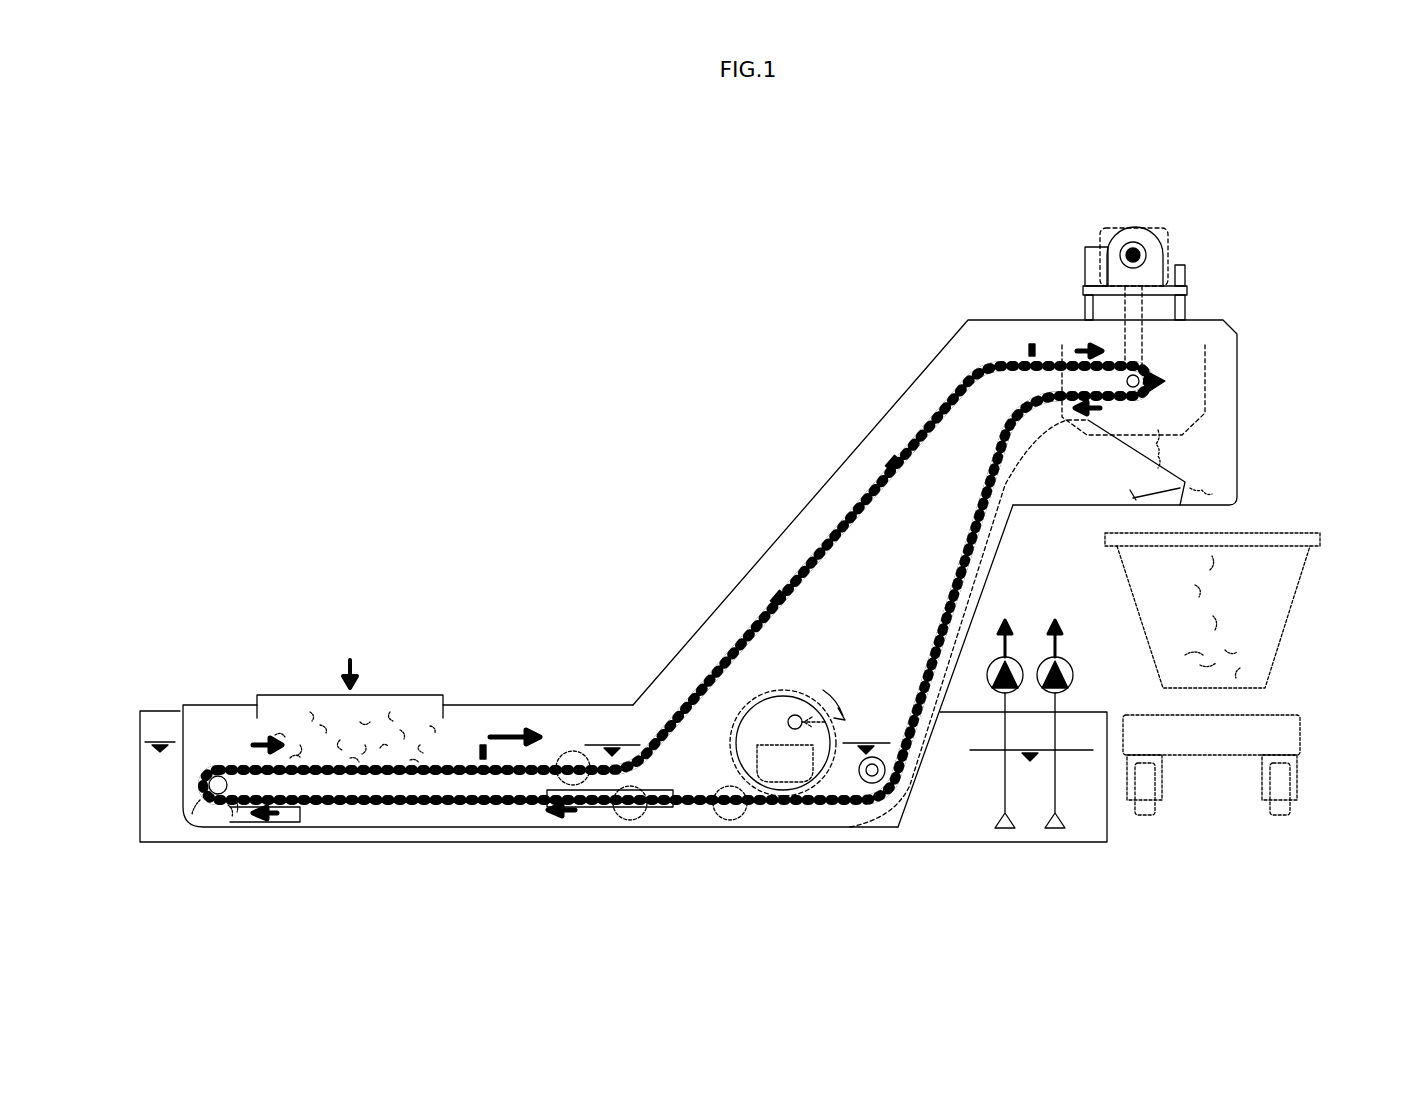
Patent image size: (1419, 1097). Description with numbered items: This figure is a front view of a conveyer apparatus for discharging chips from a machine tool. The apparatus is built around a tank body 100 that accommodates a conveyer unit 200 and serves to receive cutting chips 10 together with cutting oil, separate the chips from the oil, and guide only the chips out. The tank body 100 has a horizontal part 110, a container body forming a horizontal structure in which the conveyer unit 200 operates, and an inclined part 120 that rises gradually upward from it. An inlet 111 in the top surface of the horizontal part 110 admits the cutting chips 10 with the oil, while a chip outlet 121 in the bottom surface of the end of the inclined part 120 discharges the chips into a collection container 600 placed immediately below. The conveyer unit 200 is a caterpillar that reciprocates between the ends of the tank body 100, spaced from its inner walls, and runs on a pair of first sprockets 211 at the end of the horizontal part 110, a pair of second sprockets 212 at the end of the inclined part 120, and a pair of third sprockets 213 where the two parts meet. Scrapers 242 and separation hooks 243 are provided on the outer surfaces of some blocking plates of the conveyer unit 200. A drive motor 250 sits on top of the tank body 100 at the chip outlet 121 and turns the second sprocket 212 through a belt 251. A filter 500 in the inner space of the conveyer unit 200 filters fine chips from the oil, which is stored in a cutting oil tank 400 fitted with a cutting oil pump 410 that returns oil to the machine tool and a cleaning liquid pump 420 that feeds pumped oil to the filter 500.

The cutting chips 10 is at (405, 750).
The tank body 100 is at (745, 537).
The horizontal part 110 is at (505, 705).
The inlet 111 is at (320, 695).
The inclined part 120 is at (795, 510).
The chip outlet 121 is at (1217, 508).
The conveyer unit 200 is at (712, 632).
The first sprockets 211 is at (230, 760).
The second sprocket 212 is at (1115, 370).
The third sprocket 213 is at (850, 827).
The scrapers 242 is at (765, 593).
The separation hooks 243 is at (882, 456).
The drive motor 250 is at (1147, 232).
The belt 251 is at (1150, 337).
The cutting oil tank 400 is at (968, 858).
The cutting oil pump 410 is at (1060, 655).
The cleaning liquid pump 420 is at (1010, 655).
The filter 500 is at (820, 668).
The collection container 600 is at (1277, 627).